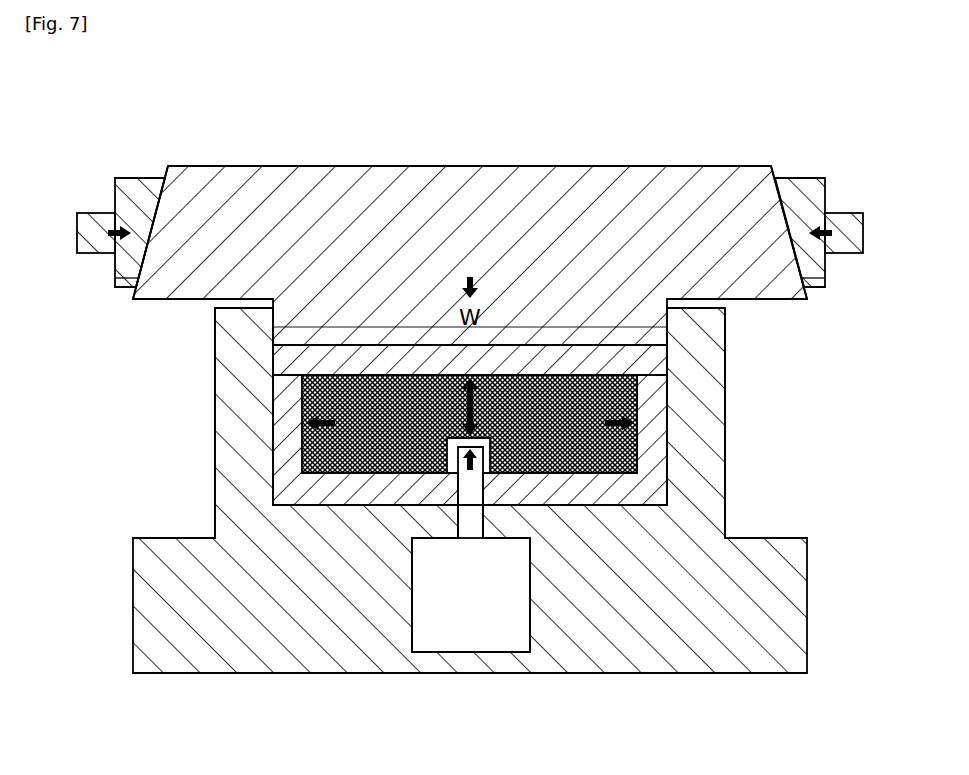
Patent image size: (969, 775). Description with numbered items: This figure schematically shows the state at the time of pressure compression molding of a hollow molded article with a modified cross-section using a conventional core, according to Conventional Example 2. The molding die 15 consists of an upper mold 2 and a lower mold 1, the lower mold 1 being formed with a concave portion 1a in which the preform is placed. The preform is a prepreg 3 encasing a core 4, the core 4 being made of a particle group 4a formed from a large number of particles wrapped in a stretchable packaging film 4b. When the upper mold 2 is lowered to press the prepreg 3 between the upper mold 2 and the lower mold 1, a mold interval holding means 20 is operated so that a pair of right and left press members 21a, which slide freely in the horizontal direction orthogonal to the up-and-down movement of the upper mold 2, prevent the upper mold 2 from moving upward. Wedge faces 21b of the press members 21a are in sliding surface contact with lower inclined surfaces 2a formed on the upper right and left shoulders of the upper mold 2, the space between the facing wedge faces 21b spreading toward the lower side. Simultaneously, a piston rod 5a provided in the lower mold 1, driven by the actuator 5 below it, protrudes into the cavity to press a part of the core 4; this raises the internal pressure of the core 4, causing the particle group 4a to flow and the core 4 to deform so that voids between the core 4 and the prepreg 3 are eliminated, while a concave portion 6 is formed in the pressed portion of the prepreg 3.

The lower mold 1 is at (289, 610).
The concave portion 1a is at (660, 456).
The upper mold 2 is at (291, 245).
The lower inclined surfaces 2a is at (150, 263).
The prepreg 3 is at (615, 360).
The core 4 is at (399, 440).
The particle group 4a is at (302, 450).
The stretchable packaging film 4b is at (302, 433).
The actuator 5 is at (484, 625).
The piston rod 5a is at (473, 523).
The concave portion 6 is at (458, 505).
The molding die 15 is at (471, 209).
The mold interval holding means 20 is at (471, 196).
The press members 21a is at (127, 200).
The wedge faces 21b is at (117, 279).